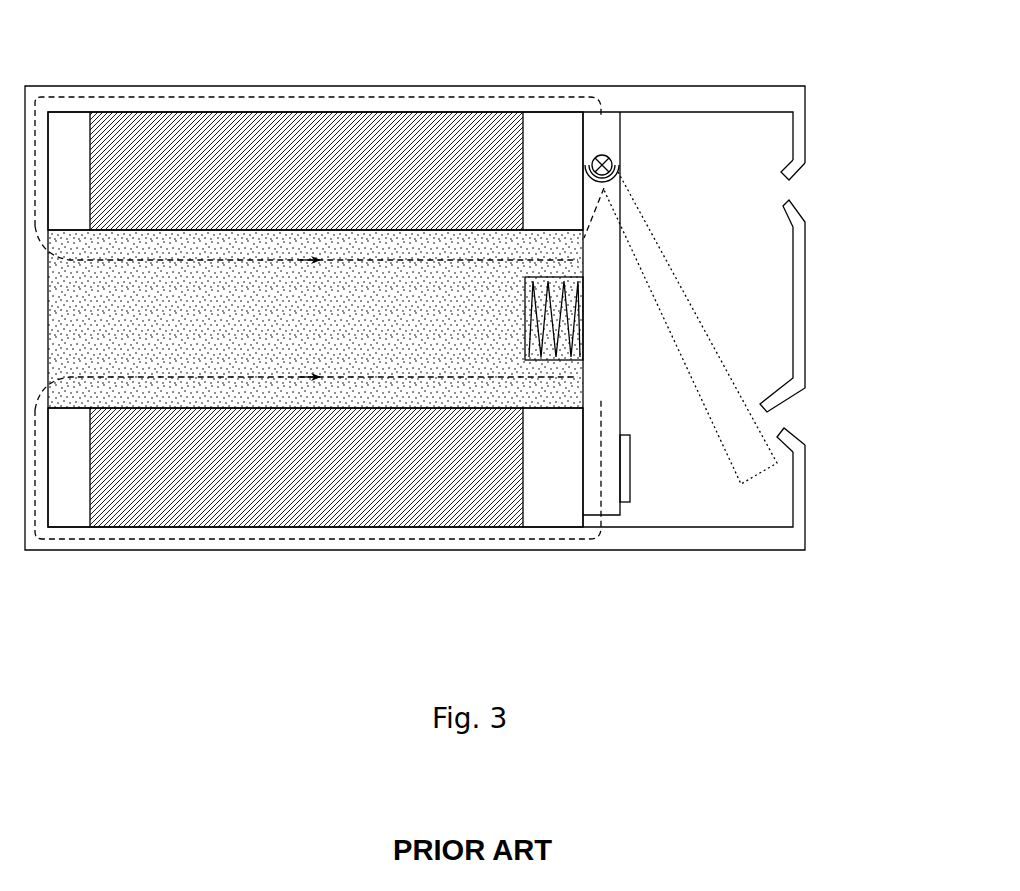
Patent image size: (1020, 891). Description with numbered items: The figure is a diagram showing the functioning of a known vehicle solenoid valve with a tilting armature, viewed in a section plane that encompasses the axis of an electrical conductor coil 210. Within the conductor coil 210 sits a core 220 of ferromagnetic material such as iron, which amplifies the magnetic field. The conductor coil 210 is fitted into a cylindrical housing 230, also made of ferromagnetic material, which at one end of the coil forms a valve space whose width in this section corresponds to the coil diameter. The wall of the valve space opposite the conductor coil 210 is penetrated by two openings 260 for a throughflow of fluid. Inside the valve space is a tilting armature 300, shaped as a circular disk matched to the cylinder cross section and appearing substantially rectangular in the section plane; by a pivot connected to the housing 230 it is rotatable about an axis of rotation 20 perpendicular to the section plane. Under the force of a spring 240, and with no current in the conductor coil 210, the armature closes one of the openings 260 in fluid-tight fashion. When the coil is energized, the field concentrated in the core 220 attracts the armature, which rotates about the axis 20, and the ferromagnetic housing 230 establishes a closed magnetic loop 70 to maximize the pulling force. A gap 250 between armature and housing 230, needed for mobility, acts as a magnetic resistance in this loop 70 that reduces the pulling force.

The axis of rotation 20 is at (602, 153).
The closed magnetic loop 70 is at (384, 97).
The electrical conductor coil 210 is at (266, 179).
The core 220 is at (197, 337).
The cylindrical housing 230 is at (640, 550).
The spring 240 is at (580, 300).
The gap 250 is at (627, 520).
The openings 260 is at (797, 192).
The tilting armature 300 is at (622, 283).